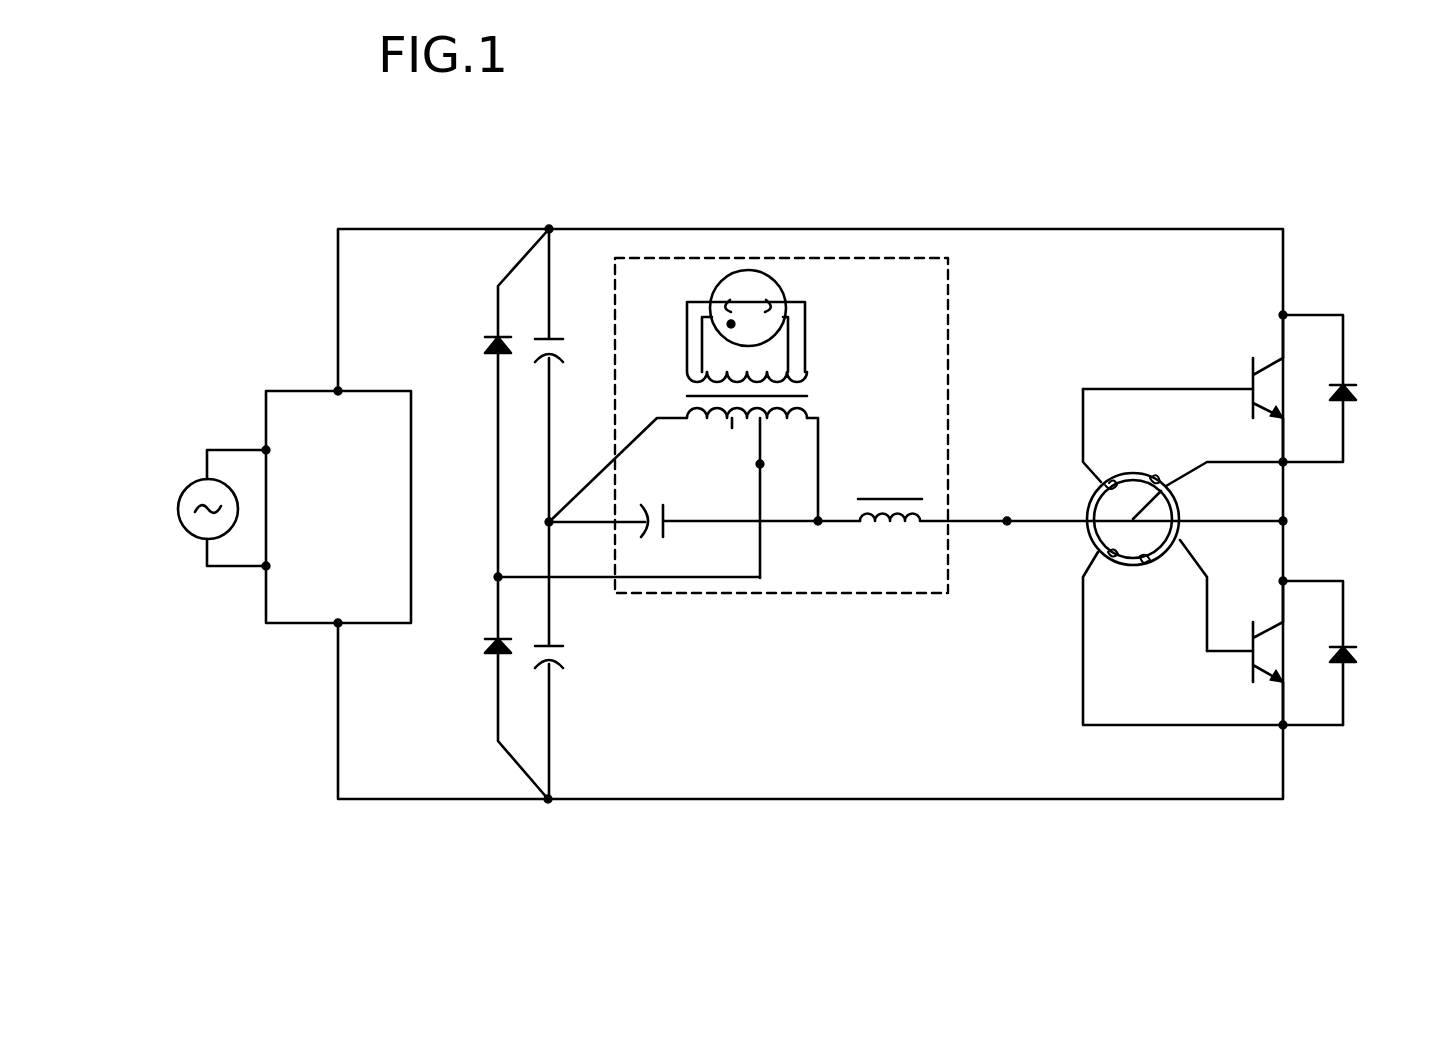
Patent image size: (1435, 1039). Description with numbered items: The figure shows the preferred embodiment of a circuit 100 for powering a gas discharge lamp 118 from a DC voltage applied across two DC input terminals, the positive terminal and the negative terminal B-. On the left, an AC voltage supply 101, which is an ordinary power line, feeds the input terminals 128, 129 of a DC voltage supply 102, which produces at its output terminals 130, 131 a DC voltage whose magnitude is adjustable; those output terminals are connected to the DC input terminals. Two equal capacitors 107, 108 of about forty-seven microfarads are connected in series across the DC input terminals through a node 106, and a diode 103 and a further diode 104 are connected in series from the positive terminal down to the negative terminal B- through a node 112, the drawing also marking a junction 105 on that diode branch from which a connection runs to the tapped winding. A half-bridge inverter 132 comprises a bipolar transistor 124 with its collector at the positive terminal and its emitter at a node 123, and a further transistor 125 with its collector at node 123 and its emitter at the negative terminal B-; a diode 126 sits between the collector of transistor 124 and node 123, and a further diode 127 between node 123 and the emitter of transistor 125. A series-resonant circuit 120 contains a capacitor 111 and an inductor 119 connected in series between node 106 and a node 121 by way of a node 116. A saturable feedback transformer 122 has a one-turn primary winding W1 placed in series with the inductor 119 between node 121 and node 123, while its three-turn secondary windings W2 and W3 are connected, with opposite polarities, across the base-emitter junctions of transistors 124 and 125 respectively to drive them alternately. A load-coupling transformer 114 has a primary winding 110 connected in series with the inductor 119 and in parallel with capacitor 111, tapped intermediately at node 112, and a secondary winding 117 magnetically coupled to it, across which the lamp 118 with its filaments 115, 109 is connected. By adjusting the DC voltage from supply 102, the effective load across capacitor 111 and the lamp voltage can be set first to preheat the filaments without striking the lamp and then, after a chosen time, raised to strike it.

The circuit 100 is at (582, 175).
The AC voltage supply 101 is at (195, 485).
The DC voltage supply 102 is at (280, 623).
The diode 103 is at (490, 330).
The diode 104 is at (490, 648).
The node 105 is at (498, 577).
The node 106 is at (549, 522).
The capacitor 107 is at (560, 340).
The capacitor 108 is at (560, 668).
The filament 109 is at (766, 300).
The primary winding 110 is at (732, 428).
The capacitor 111 is at (668, 535).
The node 112 is at (760, 464).
The load-coupling transformer 114 is at (805, 396).
The filament 115 is at (730, 300).
The node 116 is at (818, 521).
The secondary winding 117 is at (768, 378).
The gas discharge lamp 118 is at (748, 270).
The inductor 119 is at (866, 500).
The series-resonant circuit 120 is at (822, 594).
The node 121 is at (1007, 521).
The saturable feedback transformer 122 is at (1090, 535).
The node 123 is at (1283, 521).
The bipolar transistor 124 is at (1250, 365).
The transistor 125 is at (1250, 660).
The diode 126 is at (1350, 385).
The diode 127 is at (1352, 647).
The input terminal 128 is at (266, 450).
The input terminal 129 is at (266, 566).
The output terminal 130 is at (338, 391).
The output terminal 131 is at (338, 623).
The half-bridge inverter 132 is at (1337, 228).
The primary winding W1 is at (1180, 500).
The secondary winding W2 is at (1130, 477).
The secondary winding W3 is at (1145, 565).
The negative DC input terminal B- is at (548, 799).